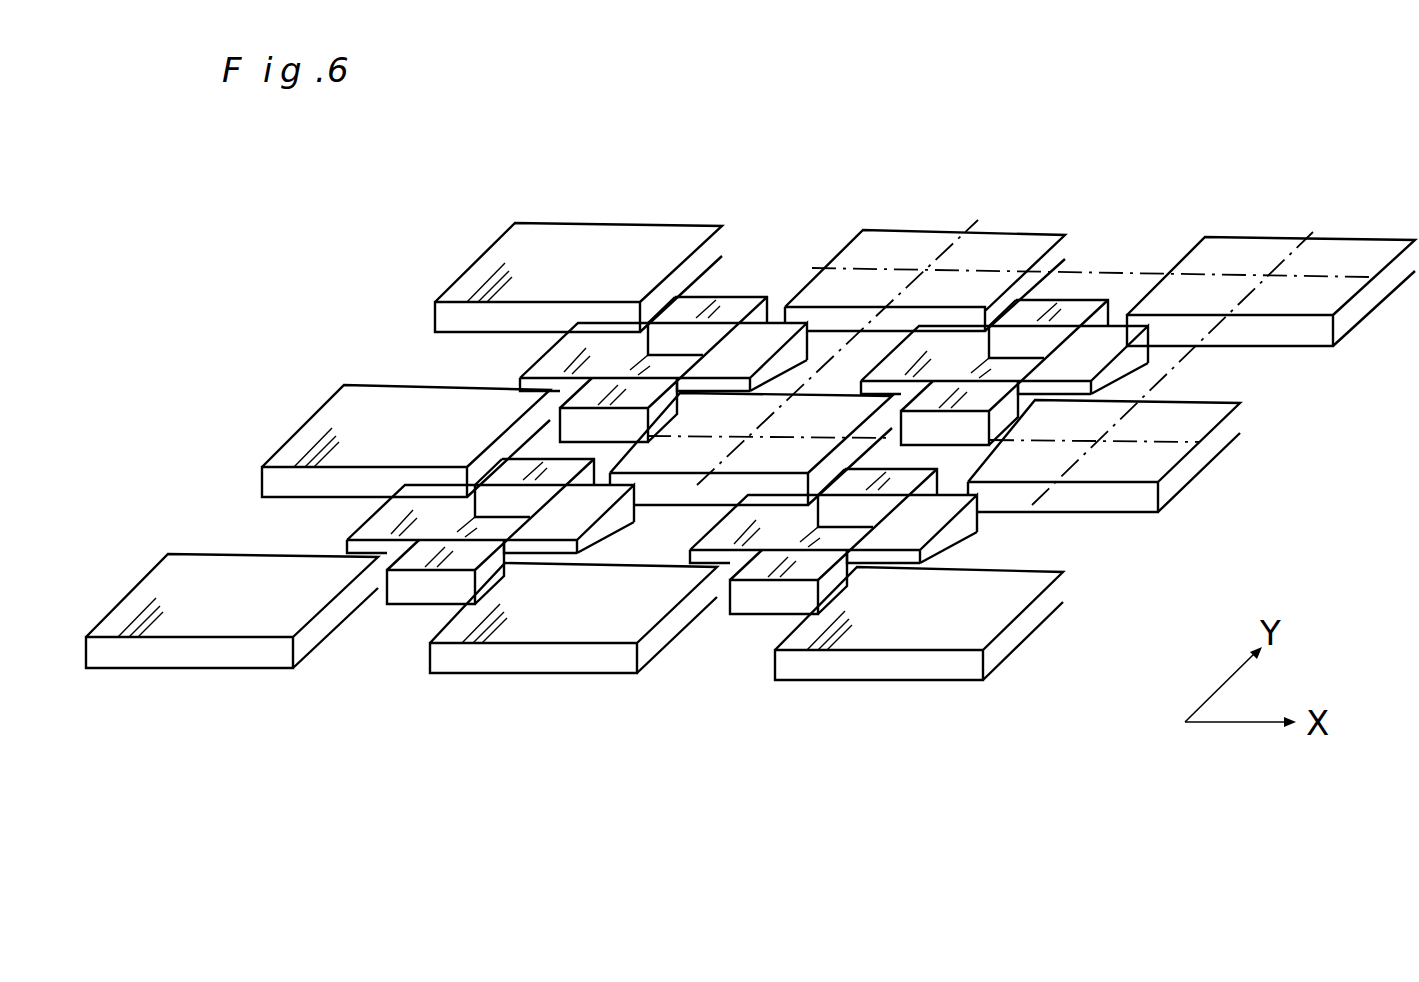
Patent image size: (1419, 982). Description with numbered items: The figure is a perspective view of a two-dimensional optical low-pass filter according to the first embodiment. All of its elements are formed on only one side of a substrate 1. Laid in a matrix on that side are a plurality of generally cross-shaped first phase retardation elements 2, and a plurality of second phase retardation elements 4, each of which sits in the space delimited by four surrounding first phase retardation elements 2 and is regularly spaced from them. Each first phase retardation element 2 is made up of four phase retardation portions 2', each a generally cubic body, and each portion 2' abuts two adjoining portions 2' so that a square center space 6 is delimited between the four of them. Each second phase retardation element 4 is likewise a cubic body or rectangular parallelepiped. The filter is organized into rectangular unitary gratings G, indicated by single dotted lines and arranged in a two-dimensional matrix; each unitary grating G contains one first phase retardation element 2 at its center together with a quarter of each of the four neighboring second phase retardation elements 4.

The substrate 1 is at (1237, 383).
The first phase retardation element 2 is at (728, 521).
The phase retardation portion 2' is at (791, 523).
The second phase retardation element 4 is at (212, 616).
The square center space 6 is at (470, 532).
The unitary grating G is at (1115, 270).